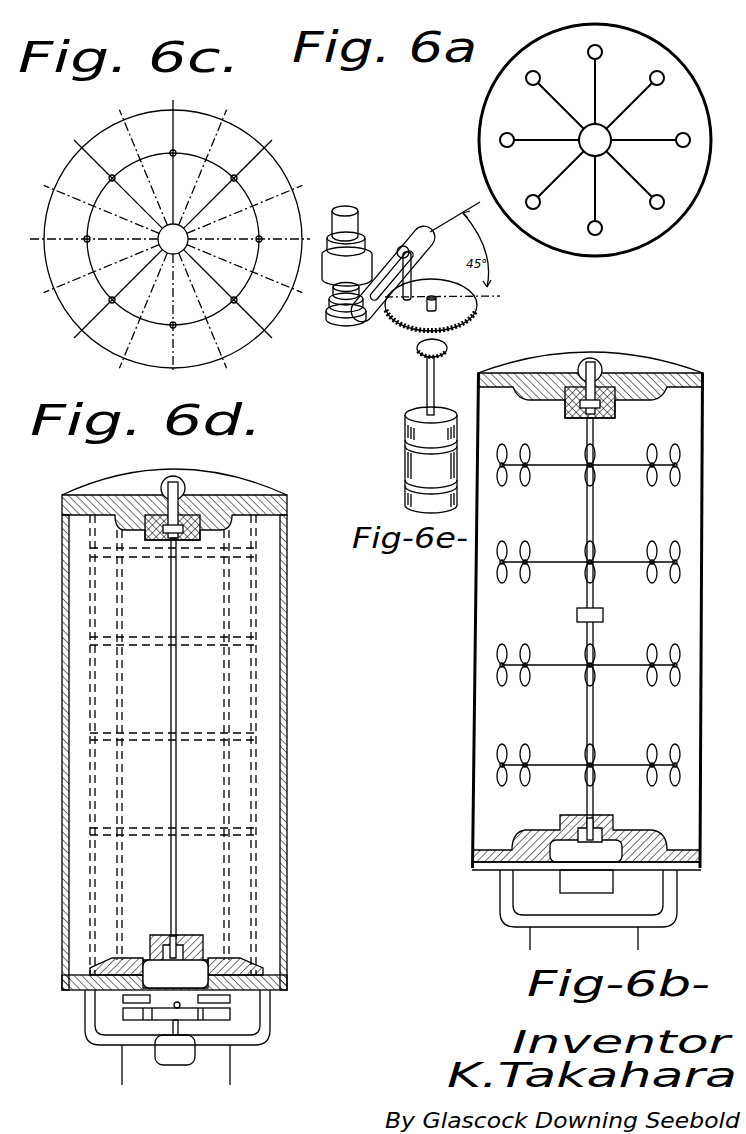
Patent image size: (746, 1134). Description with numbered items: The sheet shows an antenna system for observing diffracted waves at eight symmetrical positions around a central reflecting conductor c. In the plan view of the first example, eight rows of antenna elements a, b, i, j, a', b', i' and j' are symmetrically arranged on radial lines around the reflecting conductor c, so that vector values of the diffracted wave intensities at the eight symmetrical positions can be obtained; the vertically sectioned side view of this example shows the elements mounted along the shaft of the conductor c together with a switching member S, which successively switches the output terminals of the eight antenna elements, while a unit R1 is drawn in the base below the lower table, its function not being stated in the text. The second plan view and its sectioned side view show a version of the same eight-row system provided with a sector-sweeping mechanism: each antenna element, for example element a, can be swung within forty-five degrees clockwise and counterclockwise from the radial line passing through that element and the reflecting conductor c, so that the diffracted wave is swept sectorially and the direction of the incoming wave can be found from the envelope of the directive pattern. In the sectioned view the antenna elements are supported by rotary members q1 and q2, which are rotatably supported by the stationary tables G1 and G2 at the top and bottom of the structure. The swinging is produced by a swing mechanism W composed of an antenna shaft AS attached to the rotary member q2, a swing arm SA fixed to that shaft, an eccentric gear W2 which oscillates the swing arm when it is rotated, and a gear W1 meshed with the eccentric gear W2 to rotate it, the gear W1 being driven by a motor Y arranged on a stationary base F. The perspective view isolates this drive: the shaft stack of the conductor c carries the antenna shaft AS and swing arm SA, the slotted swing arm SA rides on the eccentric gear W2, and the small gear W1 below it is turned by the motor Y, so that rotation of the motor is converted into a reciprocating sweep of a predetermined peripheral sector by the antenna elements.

In FIG. 6C, the antenna element a is at (178, 162).
In FIG. 6A, the antenna element a is at (601, 78).
In FIG. 6C, the antenna element i is at (228, 184).
In FIG. 6A, the antenna element i is at (640, 99).
In FIG. 6C, the antenna element b is at (268, 232).
In FIG. 6A, the antenna element b is at (656, 133).
In FIG. 6B, the antenna element b is at (675, 606).
In FIG. 6C, the antenna element j is at (228, 294).
In FIG. 6A, the antenna element j is at (638, 184).
In FIG. 6B, the antenna element j is at (651, 606).
In FIG. 6C, the antenna element a' is at (179, 334).
In FIG. 6A, the antenna element a' is at (599, 203).
In FIG. 6B, the antenna element a' is at (597, 606).
In FIG. 6C, the antenna element i' is at (118, 294).
In FIG. 6A, the antenna element i' is at (555, 189).
In FIG. 6B, the antenna element i' is at (524, 606).
In FIG. 6C, the antenna element b' is at (78, 231).
In FIG. 6A, the antenna element b' is at (539, 129).
In FIG. 6B, the antenna element b' is at (501, 606).
In FIG. 6C, the antenna element j' is at (118, 184).
In FIG. 6A, the antenna element j' is at (549, 94).
In FIG. 6C, the reflecting conductor c is at (179, 238).
In FIG. 6A, the reflecting conductor c is at (600, 138).
In FIG. 6E, the reflecting conductor c is at (350, 226).
In FIG. 6D, the reflecting conductor c is at (178, 683).
In FIG. 6B, the reflecting conductor c is at (596, 634).
In FIG. 6E, the antenna shaft AS is at (333, 301).
In FIG. 6D, the antenna shaft AS is at (175, 990).
In FIG. 6E, the swing arm SA is at (343, 320).
In FIG. 6D, the swing arm SA is at (268, 994).
In FIG. 6E, the eccentric gear W2 is at (462, 303).
In FIG. 6D, the eccentric gear W2 is at (222, 1003).
In FIG. 6E, the gear W1 is at (446, 351).
In FIG. 6D, the gear W1 is at (185, 1012).
In FIG. 6E, the driving motor Y is at (422, 428).
In FIG. 6D, the driving motor Y is at (175, 1050).
In FIG. 6D, the stationary table G1 is at (228, 508).
In FIG. 6B, the stationary table G1 is at (660, 388).
In FIG. 6D, the stationary table G2 is at (272, 996).
In FIG. 6B, the stationary table G2 is at (662, 866).
In FIG. 6D, the rotary member q1 is at (195, 512).
In FIG. 6D, the rotary member q2 is at (177, 855).
In FIG. 6D, the swing mechanism W is at (150, 997).
In FIG. 6D, the stationary base F is at (262, 1032).
In FIG. 6B, the switching member S is at (597, 617).
In FIG. 6B, the reduction gear box R1 is at (586, 881).